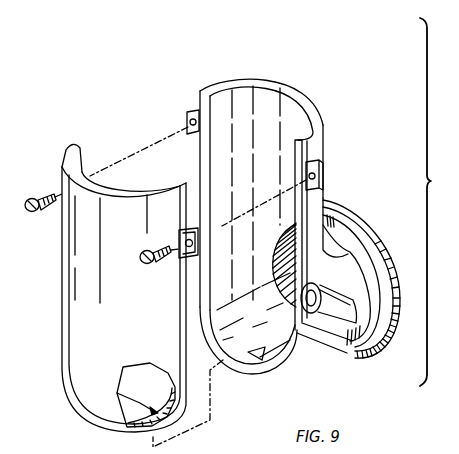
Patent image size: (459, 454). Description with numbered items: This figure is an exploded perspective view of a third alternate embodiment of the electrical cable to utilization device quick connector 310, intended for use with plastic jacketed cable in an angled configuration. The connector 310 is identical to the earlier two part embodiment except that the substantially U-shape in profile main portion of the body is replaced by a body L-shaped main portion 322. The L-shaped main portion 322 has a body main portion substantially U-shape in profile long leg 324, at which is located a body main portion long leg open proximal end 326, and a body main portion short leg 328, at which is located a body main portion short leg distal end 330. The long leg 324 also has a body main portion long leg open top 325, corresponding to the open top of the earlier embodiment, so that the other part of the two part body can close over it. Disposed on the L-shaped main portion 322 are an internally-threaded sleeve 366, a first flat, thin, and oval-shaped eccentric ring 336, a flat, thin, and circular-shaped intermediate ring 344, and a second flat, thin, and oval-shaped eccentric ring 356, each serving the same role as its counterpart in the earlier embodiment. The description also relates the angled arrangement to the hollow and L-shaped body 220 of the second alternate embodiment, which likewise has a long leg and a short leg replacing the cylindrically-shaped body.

The electrical cable to utilization device quick connector 310 is at (116, 101).
The body L-shaped main portion 322 is at (213, 86).
The body main portion substantially U-shape in profile long leg 324 is at (277, 82).
The body main portion long leg open top 325 is at (199, 112).
The body main portion long leg open proximal end 326 is at (238, 82).
The body main portion short leg 328 is at (304, 353).
The body main portion short leg distal end 330 is at (334, 225).
The first flat, thin, and oval-shaped eccentric ring 336 is at (350, 208).
The flat, thin, and circular-shaped intermediate ring 344 is at (372, 222).
The second flat, thin, and oval-shaped eccentric ring 356 is at (389, 253).
The internally-threaded sleeve 366 is at (339, 310).
The hollow and L-shaped body 220 is at (229, 398).